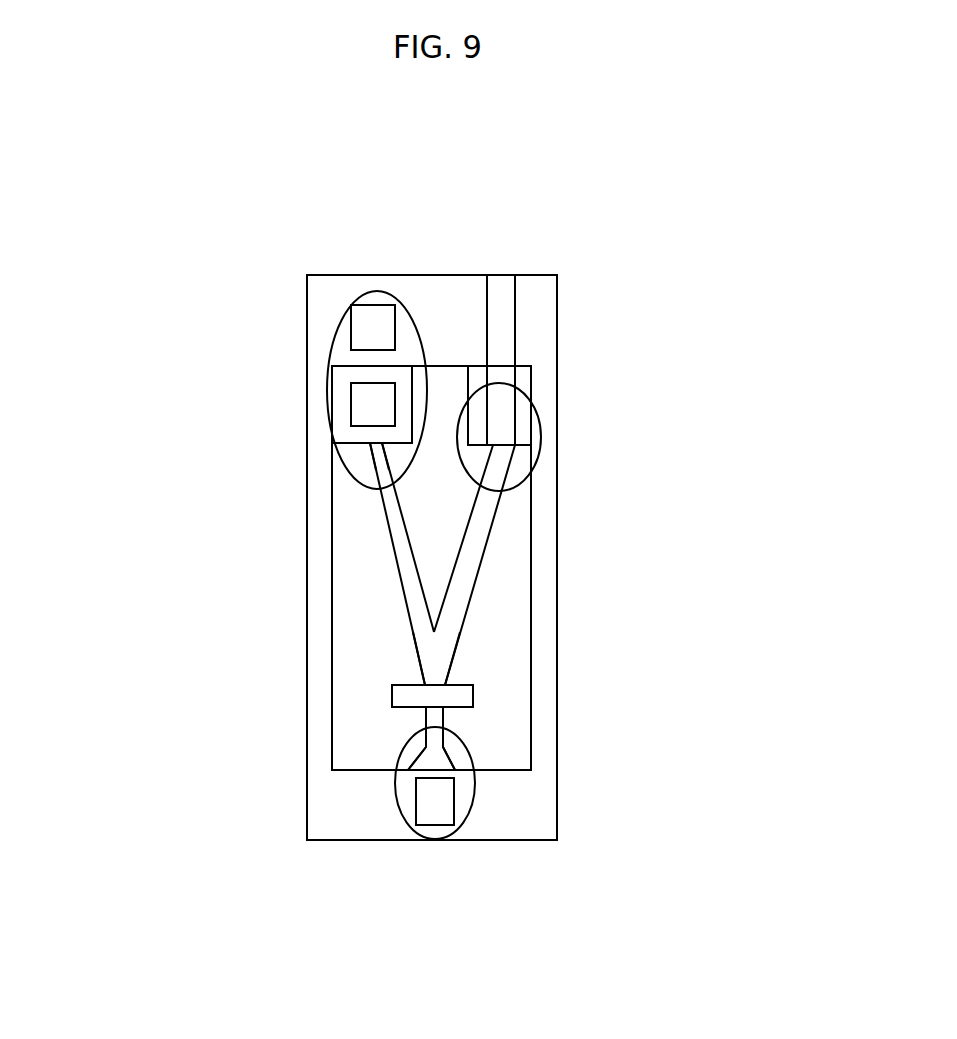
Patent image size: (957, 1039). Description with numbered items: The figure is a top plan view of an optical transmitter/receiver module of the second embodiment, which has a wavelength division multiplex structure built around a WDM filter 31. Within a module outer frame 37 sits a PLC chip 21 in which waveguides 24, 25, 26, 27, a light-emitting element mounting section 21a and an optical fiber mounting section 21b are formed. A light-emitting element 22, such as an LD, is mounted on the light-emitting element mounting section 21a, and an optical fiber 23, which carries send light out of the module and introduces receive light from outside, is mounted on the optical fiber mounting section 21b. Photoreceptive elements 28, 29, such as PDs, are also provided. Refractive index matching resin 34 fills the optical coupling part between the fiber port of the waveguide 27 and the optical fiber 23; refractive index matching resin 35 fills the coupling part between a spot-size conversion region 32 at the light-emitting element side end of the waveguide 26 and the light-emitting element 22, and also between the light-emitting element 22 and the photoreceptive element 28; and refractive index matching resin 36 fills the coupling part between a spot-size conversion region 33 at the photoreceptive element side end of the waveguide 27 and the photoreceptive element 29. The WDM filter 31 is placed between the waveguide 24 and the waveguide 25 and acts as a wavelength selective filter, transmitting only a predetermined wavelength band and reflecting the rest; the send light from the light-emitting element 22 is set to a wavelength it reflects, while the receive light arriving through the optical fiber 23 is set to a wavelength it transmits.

The PLC chip 21 is at (532, 519).
The light-emitting element mounting section 21a is at (345, 372).
The optical fiber mounting section 21b is at (532, 385).
The light-emitting element 22 is at (350, 410).
The optical fiber 23 is at (517, 302).
The waveguide 24 is at (425, 717).
The waveguide 25 is at (418, 647).
The waveguide 26 is at (392, 561).
The waveguide 27 is at (480, 570).
The photoreceptive element 28 is at (369, 305).
The photoreceptive element 29 is at (437, 827).
The WDM filter 31 is at (476, 692).
The spot-size conversion region 32 is at (378, 459).
The spot-size conversion region 33 is at (438, 757).
The refractive index matching resin 34 is at (542, 438).
The refractive index matching resin 35 is at (338, 325).
The refractive index matching resin 36 is at (400, 807).
The module outer frame 37 is at (557, 826).